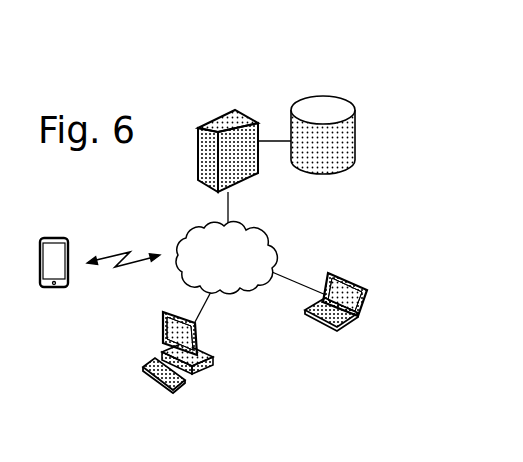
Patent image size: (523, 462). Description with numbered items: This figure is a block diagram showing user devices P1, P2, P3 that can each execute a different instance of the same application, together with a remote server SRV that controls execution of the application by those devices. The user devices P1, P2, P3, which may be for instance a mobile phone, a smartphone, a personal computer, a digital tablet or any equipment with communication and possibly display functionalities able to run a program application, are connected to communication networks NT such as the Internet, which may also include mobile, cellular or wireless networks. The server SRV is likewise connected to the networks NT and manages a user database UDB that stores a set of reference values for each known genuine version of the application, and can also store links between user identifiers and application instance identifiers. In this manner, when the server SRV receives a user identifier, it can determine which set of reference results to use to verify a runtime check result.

The server SRV is at (212, 120).
The user database UDB is at (323, 135).
The communication networks NT is at (246, 272).
The user device P1 is at (60, 288).
The user device P2 is at (183, 388).
The user device P3 is at (337, 331).